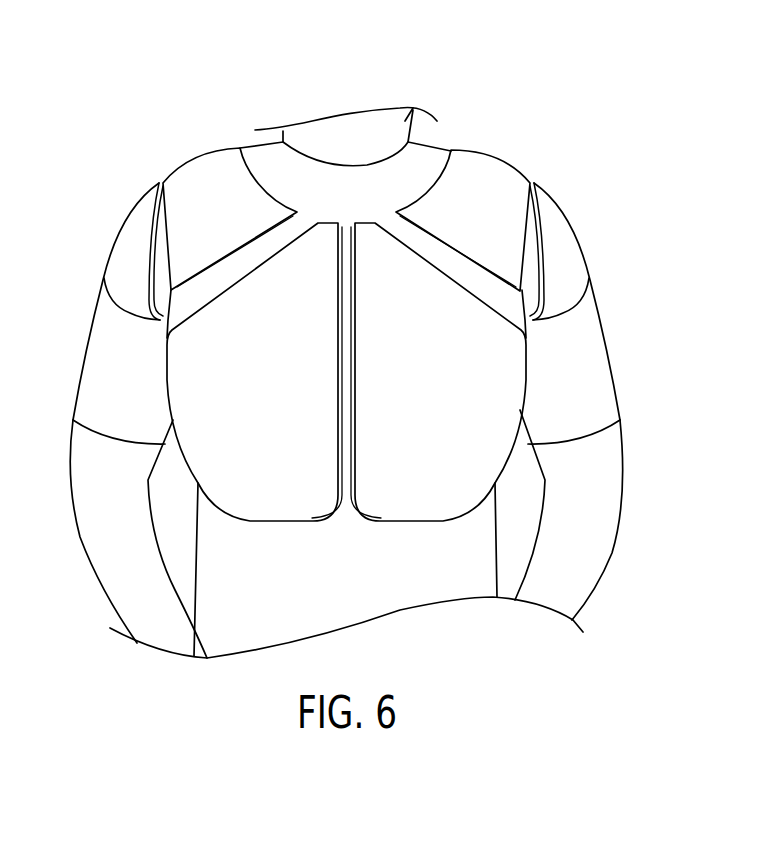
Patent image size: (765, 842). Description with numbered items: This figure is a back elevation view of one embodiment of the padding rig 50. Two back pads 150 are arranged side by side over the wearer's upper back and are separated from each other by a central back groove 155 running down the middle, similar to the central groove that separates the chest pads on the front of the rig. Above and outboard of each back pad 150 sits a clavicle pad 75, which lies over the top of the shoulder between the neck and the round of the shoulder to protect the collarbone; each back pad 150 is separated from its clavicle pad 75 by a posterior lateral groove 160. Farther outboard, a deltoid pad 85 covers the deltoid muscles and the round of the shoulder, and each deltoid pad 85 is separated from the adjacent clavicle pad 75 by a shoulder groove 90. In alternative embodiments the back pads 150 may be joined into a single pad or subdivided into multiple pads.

The padding rig 50 is at (102, 109).
The clavicle pad 75 is at (205, 173).
The deltoid pad 85 is at (120, 247).
The shoulder groove 90 is at (158, 222).
The back pad 150 is at (252, 382).
The central back groove 155 is at (348, 410).
The posterior lateral groove 160 is at (222, 275).